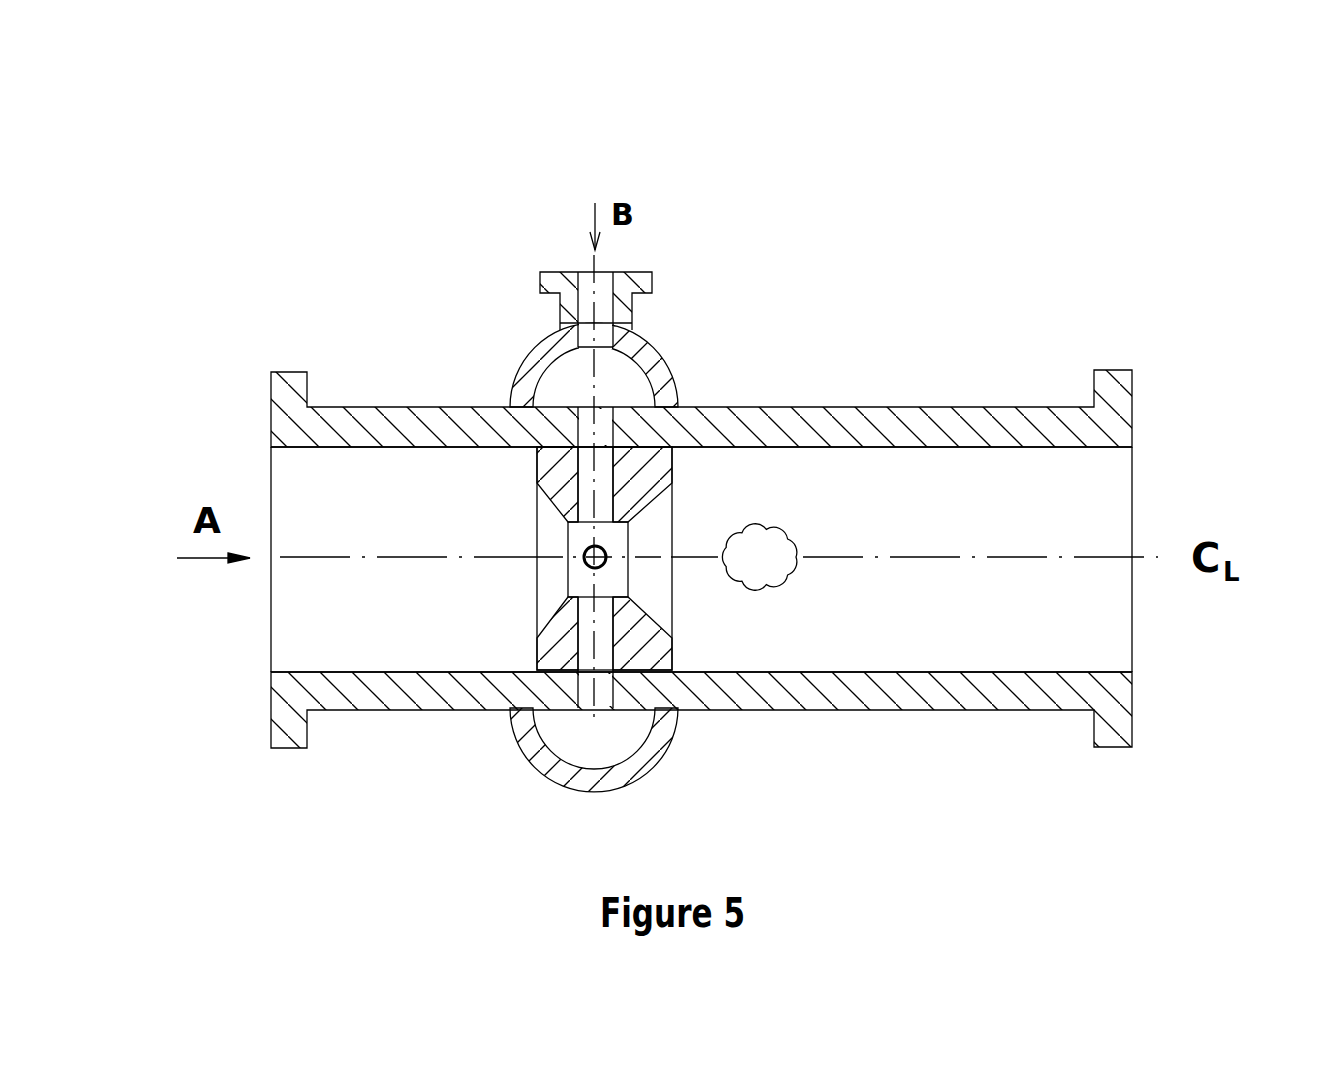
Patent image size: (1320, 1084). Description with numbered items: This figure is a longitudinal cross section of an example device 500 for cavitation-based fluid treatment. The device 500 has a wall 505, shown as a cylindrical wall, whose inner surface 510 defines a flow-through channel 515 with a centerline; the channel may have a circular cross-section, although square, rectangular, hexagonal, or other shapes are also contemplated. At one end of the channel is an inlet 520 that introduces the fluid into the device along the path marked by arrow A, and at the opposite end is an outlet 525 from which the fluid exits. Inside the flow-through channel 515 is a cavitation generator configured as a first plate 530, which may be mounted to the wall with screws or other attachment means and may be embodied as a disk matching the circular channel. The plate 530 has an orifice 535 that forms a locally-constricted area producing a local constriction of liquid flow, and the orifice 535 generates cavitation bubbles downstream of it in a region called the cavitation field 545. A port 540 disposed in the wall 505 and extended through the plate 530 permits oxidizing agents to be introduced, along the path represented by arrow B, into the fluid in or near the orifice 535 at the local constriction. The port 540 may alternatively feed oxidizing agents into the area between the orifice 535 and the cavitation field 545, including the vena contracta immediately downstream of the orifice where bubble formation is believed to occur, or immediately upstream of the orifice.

The device for cavitation-based fluid treatment 500 is at (708, 462).
The wall 505 is at (937, 430).
The inner surface 510 is at (403, 443).
The flow-through channel 515 is at (340, 507).
The inlet 520 is at (295, 493).
The outlet 525 is at (1097, 492).
The first plate 530 is at (517, 710).
The orifice 535 is at (577, 573).
The port 540 is at (610, 409).
The cavitation field 545 is at (802, 557).